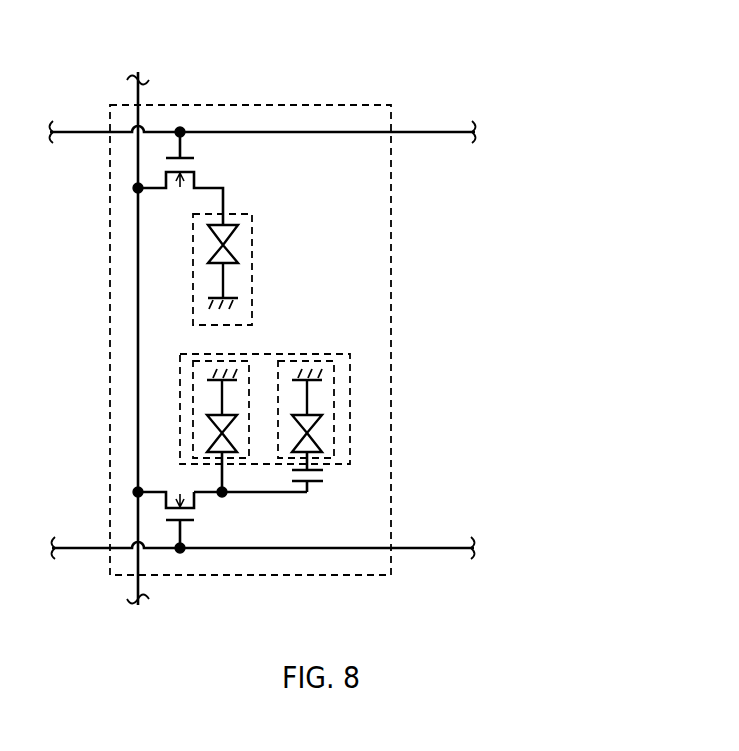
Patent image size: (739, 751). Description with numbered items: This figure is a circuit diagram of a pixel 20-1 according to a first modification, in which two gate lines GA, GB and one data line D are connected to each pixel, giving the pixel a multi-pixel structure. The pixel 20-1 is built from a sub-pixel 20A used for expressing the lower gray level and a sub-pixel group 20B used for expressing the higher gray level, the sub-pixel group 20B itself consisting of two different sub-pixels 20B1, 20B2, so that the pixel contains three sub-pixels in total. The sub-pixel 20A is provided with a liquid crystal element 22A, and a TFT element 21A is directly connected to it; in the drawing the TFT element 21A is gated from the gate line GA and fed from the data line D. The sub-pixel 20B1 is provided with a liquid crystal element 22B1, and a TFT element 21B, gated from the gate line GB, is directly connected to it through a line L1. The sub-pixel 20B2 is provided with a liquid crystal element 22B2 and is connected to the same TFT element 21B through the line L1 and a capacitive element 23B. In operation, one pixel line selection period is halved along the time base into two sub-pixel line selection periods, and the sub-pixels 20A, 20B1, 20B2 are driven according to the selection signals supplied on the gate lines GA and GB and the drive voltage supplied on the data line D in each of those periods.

The data line D is at (137, 95).
The pixel 20-1 is at (277, 104).
The gate line GA is at (455, 132).
The gate line GB is at (455, 548).
The TFT element 21A is at (140, 174).
The sub-pixel 20A is at (193, 287).
The liquid crystal element 22A is at (195, 254).
The sub-pixel group 20B is at (350, 387).
The sub-pixel 20B1 is at (183, 405).
The sub-pixel 20B2 is at (334, 415).
The liquid crystal element 22B1 is at (197, 438).
The liquid crystal element 22B2 is at (340, 440).
The capacitive element 23B is at (339, 480).
The line L1 is at (263, 494).
The TFT element 21B is at (142, 514).